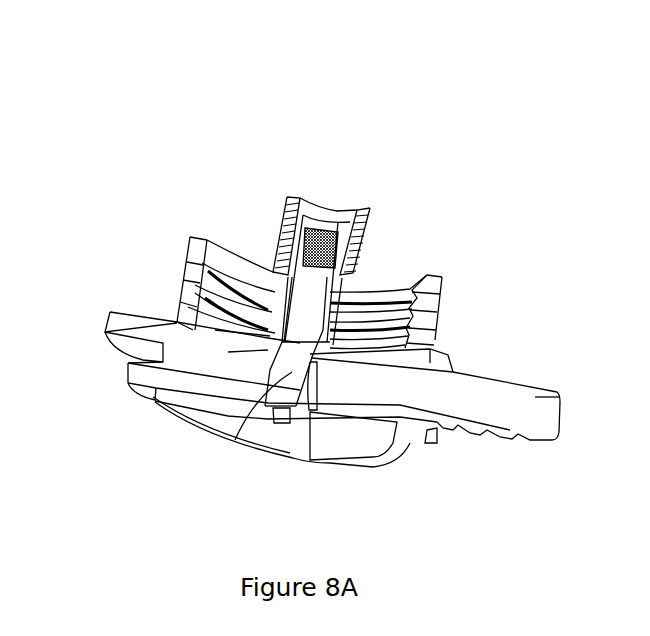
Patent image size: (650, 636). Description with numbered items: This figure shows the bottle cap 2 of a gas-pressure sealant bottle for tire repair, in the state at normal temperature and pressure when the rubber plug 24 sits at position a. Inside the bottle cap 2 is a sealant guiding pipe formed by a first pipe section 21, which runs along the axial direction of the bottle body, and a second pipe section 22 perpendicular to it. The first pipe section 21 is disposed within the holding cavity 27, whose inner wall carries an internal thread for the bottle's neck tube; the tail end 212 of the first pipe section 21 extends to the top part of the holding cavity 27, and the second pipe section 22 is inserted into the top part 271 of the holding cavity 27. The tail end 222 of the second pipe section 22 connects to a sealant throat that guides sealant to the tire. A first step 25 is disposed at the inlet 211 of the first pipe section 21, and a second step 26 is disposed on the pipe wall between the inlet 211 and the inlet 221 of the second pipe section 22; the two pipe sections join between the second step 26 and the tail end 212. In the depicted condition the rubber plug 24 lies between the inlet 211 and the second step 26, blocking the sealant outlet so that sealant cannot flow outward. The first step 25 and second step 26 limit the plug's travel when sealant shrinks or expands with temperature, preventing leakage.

The bottle cap 2 is at (343, 102).
The first pipe section 21 is at (300, 292).
The inlet of the first pipe section 211 is at (288, 196).
The tail end of the first pipe section 212 is at (286, 390).
The second pipe section 22 is at (452, 402).
The inlet of the second pipe section 221 is at (320, 380).
The tail end of the second pipe section 222 is at (528, 418).
The rubber plug 24 is at (370, 237).
The first step 25 is at (362, 200).
The second step 26 is at (285, 338).
The holding cavity 27 is at (212, 272).
The top part of the holding cavity 271 is at (177, 362).